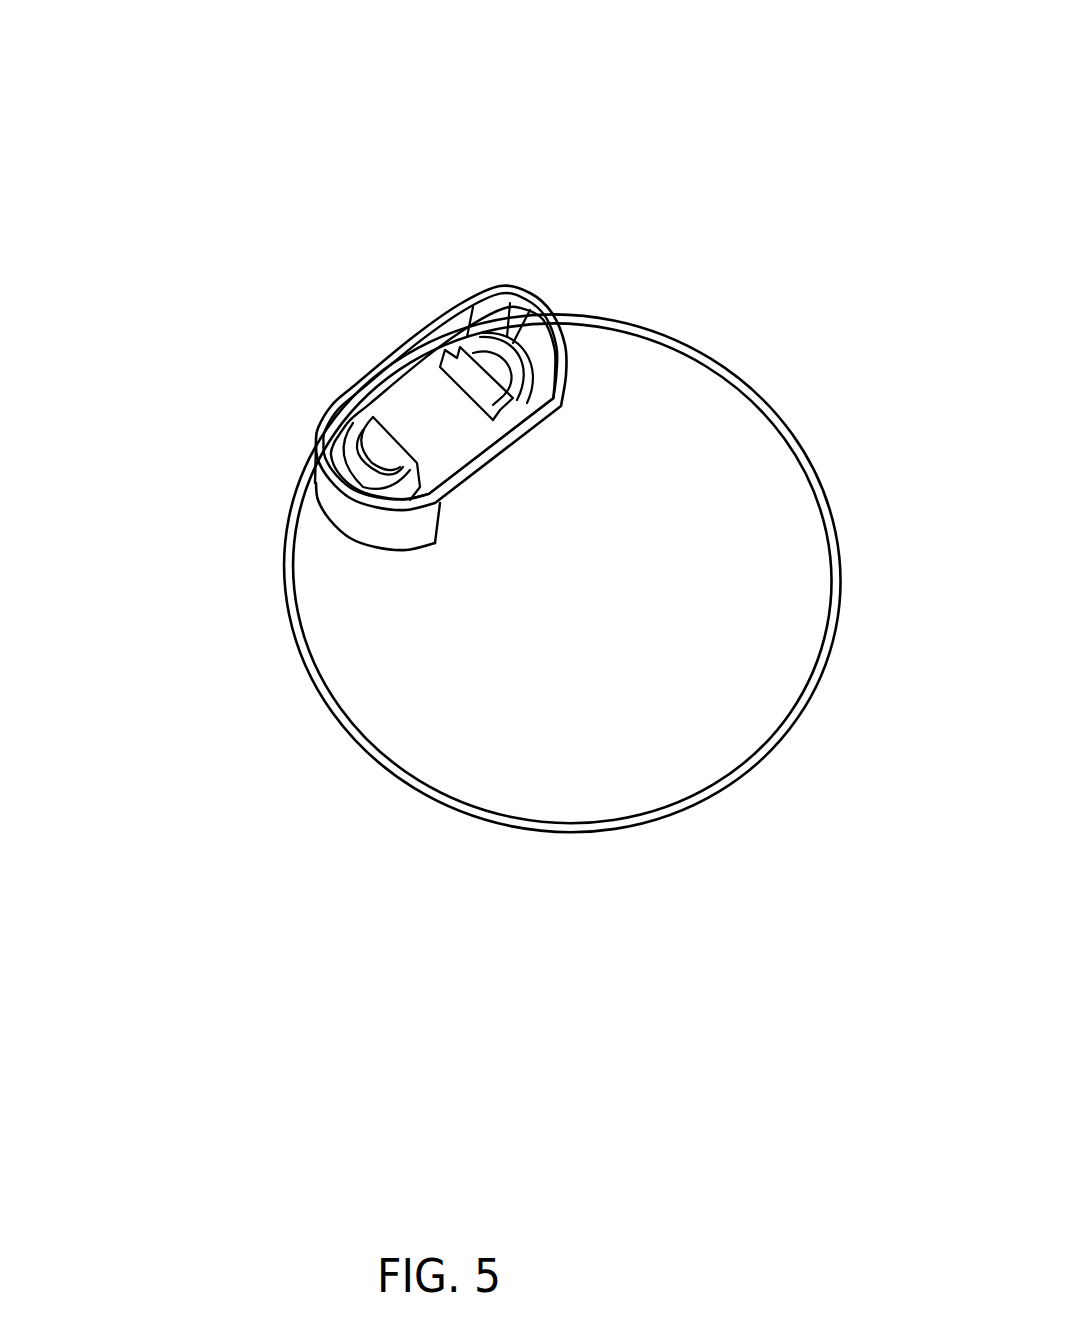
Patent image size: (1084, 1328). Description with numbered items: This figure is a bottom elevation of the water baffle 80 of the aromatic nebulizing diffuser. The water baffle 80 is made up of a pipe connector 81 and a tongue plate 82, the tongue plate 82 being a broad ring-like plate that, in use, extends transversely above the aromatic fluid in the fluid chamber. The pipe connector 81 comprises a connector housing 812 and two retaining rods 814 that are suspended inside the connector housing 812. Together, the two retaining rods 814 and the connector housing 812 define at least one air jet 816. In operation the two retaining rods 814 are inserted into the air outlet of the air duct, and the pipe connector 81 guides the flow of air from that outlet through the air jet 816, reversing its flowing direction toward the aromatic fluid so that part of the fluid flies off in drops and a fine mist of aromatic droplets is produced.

The water baffle 80 is at (532, 863).
The pipe connector 81 is at (484, 325).
The tongue plate 82 is at (650, 727).
The connector housing 812 is at (328, 502).
The retaining rods 814 is at (380, 440).
The air jet 816 is at (415, 363).